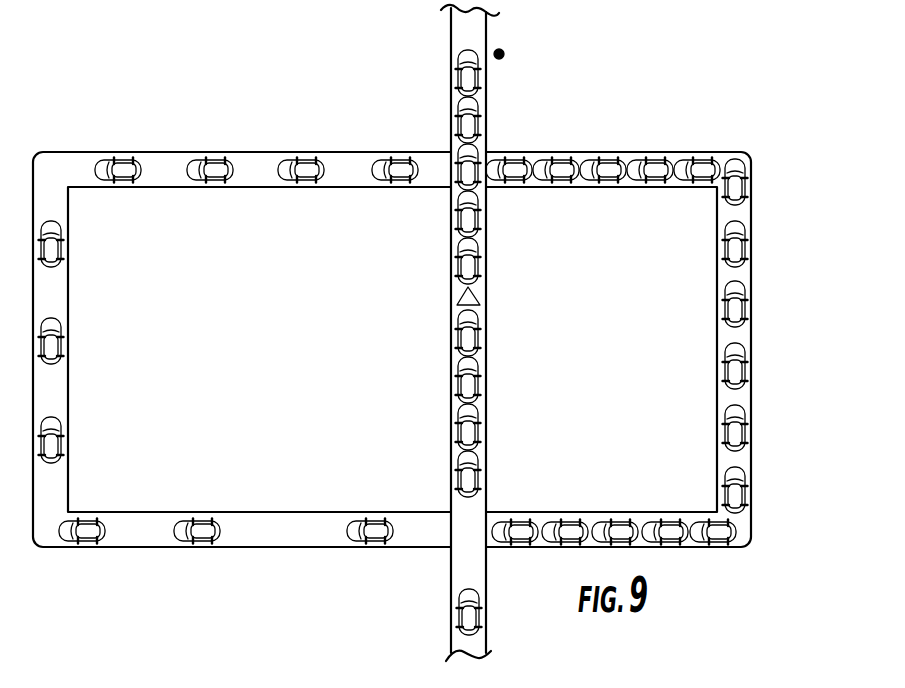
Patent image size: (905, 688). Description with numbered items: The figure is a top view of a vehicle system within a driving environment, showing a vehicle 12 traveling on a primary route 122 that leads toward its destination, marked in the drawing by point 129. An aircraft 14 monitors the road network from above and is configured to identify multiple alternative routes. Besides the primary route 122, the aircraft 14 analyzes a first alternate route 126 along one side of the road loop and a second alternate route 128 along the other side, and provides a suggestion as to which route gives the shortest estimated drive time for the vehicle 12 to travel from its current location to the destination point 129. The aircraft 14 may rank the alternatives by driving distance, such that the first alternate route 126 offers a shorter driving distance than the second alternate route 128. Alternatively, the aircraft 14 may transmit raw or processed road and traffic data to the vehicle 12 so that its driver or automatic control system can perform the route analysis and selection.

The vehicle 12 is at (478, 598).
The aircraft 14 is at (411, 220).
The primary route 122 is at (475, 315).
The first alternate route 126 is at (743, 288).
The second alternate route 128 is at (57, 287).
The destination point 129 is at (538, 43).